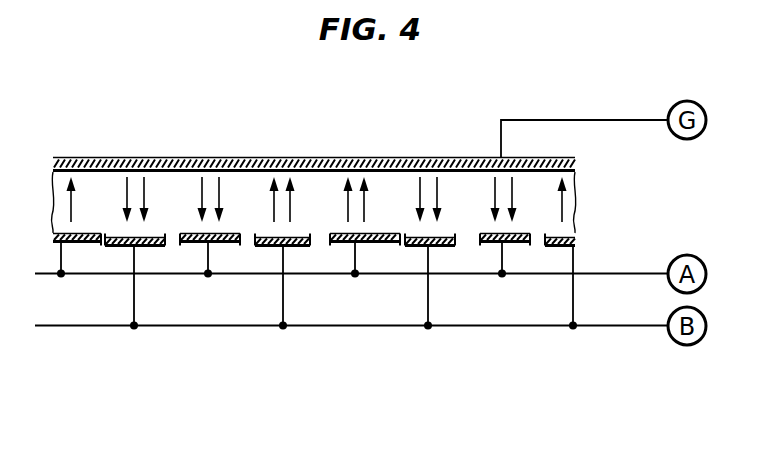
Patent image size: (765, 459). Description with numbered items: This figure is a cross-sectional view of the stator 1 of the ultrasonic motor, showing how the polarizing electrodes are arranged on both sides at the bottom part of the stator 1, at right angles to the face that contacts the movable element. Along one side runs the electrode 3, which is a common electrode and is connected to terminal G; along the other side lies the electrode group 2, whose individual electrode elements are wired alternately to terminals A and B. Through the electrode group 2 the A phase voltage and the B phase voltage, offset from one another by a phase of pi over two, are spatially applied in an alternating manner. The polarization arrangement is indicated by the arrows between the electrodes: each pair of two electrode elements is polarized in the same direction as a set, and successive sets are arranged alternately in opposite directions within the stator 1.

The stator 1 is at (314, 200).
The electrode group 2 is at (116, 246).
The electrode 3 is at (187, 157).